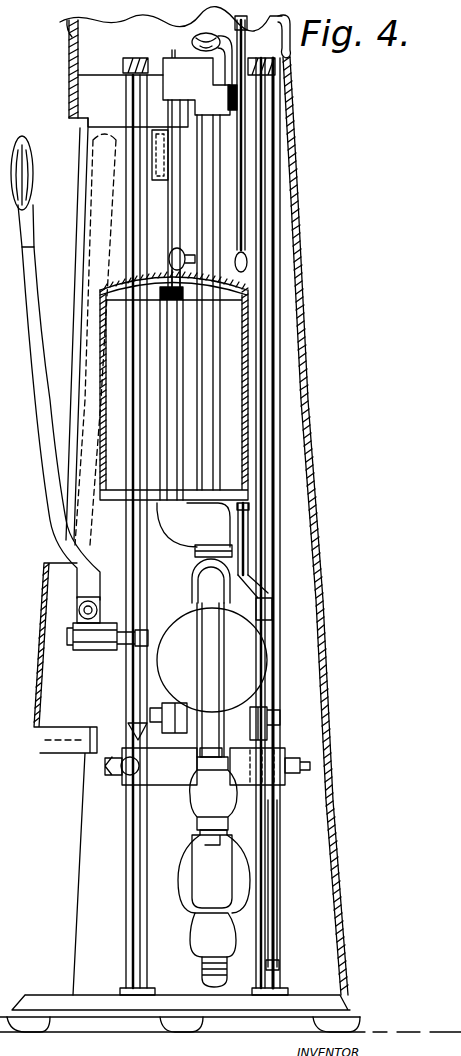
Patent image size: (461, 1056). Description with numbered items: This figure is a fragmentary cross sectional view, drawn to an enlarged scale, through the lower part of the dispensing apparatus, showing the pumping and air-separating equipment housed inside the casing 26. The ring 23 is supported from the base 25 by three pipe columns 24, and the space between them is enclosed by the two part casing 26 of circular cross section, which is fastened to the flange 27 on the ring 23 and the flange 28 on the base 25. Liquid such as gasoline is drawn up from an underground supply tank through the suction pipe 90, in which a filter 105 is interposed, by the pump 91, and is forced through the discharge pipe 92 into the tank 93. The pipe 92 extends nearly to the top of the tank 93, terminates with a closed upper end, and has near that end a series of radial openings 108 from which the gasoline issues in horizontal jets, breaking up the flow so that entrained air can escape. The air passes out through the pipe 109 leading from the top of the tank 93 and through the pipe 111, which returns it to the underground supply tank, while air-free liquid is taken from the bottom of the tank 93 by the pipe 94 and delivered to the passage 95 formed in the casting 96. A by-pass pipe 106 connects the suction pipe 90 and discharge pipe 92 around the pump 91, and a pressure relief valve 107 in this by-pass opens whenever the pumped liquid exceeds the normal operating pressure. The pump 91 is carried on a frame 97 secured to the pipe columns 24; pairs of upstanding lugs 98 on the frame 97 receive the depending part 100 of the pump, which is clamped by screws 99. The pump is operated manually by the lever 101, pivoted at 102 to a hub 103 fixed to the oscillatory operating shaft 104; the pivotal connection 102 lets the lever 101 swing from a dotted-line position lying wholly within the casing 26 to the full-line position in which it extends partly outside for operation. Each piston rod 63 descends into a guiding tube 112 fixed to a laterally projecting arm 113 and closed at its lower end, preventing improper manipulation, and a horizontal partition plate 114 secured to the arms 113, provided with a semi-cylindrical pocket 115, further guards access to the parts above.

The ring 23 is at (72, 34).
The pipe columns 24 is at (133, 968).
The base 25 is at (345, 1027).
The casing 26 is at (320, 600).
The flange 27 is at (287, 68).
The flange 28 is at (315, 1005).
The piston rod 63 is at (160, 57).
The pipe 90 is at (205, 972).
The pump 91 is at (255, 656).
The pipe 92 is at (185, 532).
The tank 93 is at (243, 415).
The pipe 94 is at (213, 358).
The passage 95 is at (192, 44).
The casting 96 is at (225, 99).
The frame 97 is at (255, 775).
The lugs 98 is at (174, 722).
The clamping screw 99 is at (148, 708).
The depending part 100 is at (197, 730).
The lever 101 is at (65, 487).
The pivotal connection 102 is at (84, 610).
The hub 103 is at (97, 643).
The operating shaft 104 is at (118, 648).
The filter 105 is at (187, 897).
The pipe 106 is at (249, 658).
The pressure relief valve 107 is at (213, 793).
The radial openings 108 is at (173, 291).
The pipe 109 is at (278, 21).
The pipe 111 is at (243, 193).
The guiding tubes 112 is at (237, 163).
The arms 113 is at (180, 85).
The partition plate 114 is at (108, 127).
The pocket 115 is at (158, 166).